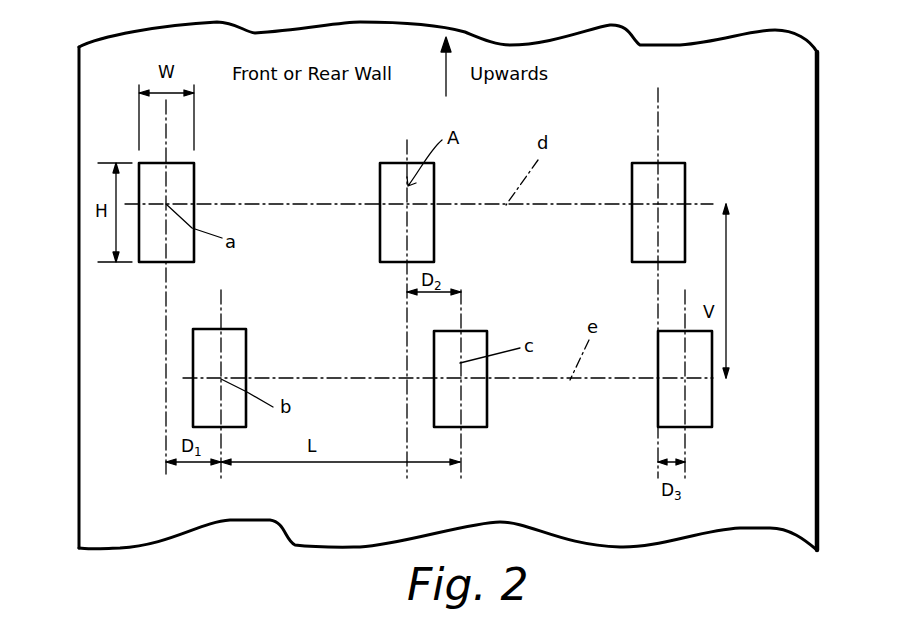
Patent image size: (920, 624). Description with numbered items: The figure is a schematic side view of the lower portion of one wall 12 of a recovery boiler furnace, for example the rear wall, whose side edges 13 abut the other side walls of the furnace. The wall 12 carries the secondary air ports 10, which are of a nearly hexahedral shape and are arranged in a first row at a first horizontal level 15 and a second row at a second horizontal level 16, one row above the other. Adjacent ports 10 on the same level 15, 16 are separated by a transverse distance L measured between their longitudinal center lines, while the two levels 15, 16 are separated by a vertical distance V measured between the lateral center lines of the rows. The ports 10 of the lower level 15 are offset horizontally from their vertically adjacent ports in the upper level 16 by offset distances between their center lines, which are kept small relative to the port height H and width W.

The secondary air port 10 is at (185, 183).
The wall 12 is at (786, 222).
The side edge 13 is at (78, 118).
The first horizontal level 15 is at (611, 380).
The second horizontal level 16 is at (580, 203).